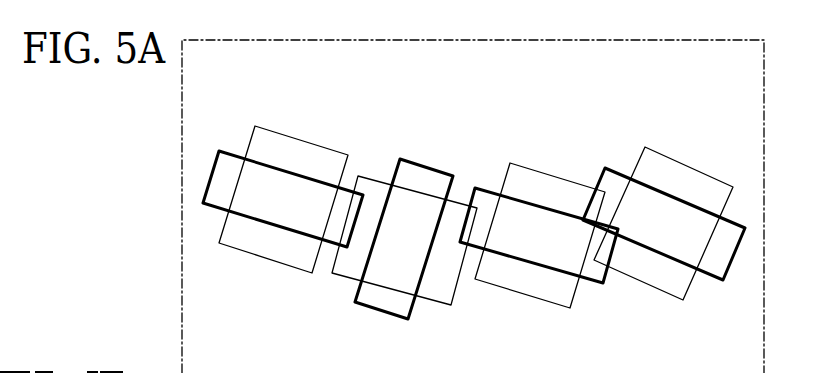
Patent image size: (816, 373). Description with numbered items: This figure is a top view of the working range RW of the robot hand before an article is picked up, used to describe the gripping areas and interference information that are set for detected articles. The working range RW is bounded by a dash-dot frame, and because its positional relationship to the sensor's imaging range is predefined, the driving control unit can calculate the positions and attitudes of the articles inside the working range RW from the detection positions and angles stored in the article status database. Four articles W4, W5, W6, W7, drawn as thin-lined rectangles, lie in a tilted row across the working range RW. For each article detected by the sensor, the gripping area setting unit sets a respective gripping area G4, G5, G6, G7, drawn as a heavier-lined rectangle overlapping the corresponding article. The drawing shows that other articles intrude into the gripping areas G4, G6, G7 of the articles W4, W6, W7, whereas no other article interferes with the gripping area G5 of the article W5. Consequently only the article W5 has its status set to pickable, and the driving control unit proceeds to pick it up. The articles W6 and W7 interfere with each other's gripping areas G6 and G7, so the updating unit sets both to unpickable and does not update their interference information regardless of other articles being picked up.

The working range RW is at (182, 215).
The article W4 is at (262, 258).
The gripping area G4 is at (222, 150).
The article W5 is at (372, 176).
The gripping area G5 is at (428, 165).
The article W6 is at (553, 176).
The gripping area G6 is at (487, 187).
The article W7 is at (690, 166).
The gripping area G7 is at (613, 170).